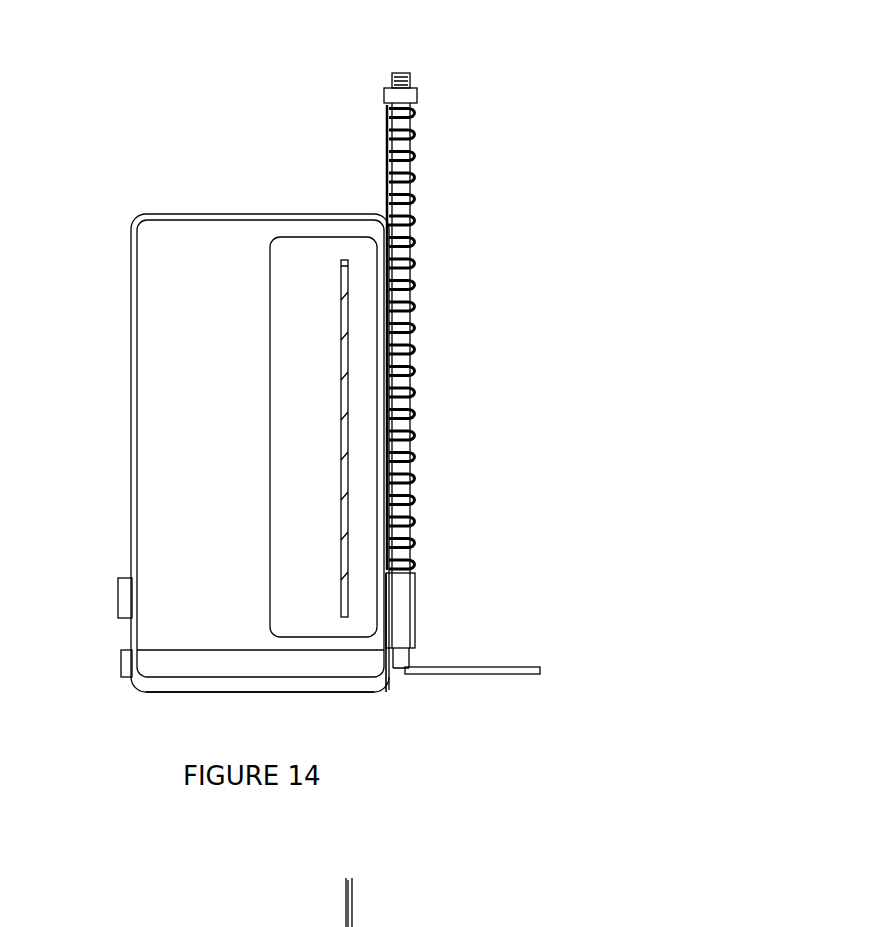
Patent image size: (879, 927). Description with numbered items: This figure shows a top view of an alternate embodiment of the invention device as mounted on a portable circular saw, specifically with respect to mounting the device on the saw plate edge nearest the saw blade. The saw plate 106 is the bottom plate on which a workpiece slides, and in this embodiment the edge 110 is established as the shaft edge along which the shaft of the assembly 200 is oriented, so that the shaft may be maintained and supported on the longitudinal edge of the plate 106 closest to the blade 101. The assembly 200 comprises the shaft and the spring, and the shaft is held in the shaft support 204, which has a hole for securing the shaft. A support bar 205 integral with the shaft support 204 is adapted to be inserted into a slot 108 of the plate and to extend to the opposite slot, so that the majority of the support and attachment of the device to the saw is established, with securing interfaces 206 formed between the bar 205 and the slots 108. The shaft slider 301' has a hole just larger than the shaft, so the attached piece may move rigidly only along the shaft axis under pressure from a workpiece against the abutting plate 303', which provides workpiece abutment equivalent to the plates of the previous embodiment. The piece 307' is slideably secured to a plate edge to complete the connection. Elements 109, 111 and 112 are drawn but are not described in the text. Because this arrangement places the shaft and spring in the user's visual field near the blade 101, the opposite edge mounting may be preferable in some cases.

The assembly 200 is at (442, 80).
The housing cover 109 is at (225, 235).
The edge 110 is at (396, 262).
The saw blade 101 is at (355, 368).
The recessed panel 111 is at (272, 348).
The saw plate 106 is at (260, 448).
The piece 307' is at (91, 581).
The shaft slider 301' is at (469, 629).
The shaft support 204 is at (403, 665).
The first abutting plate 303' is at (503, 706).
The securing interface 206 is at (130, 680).
The slot 108 is at (400, 688).
The support bar 205 is at (188, 667).
The bottom wall 112 is at (313, 697).